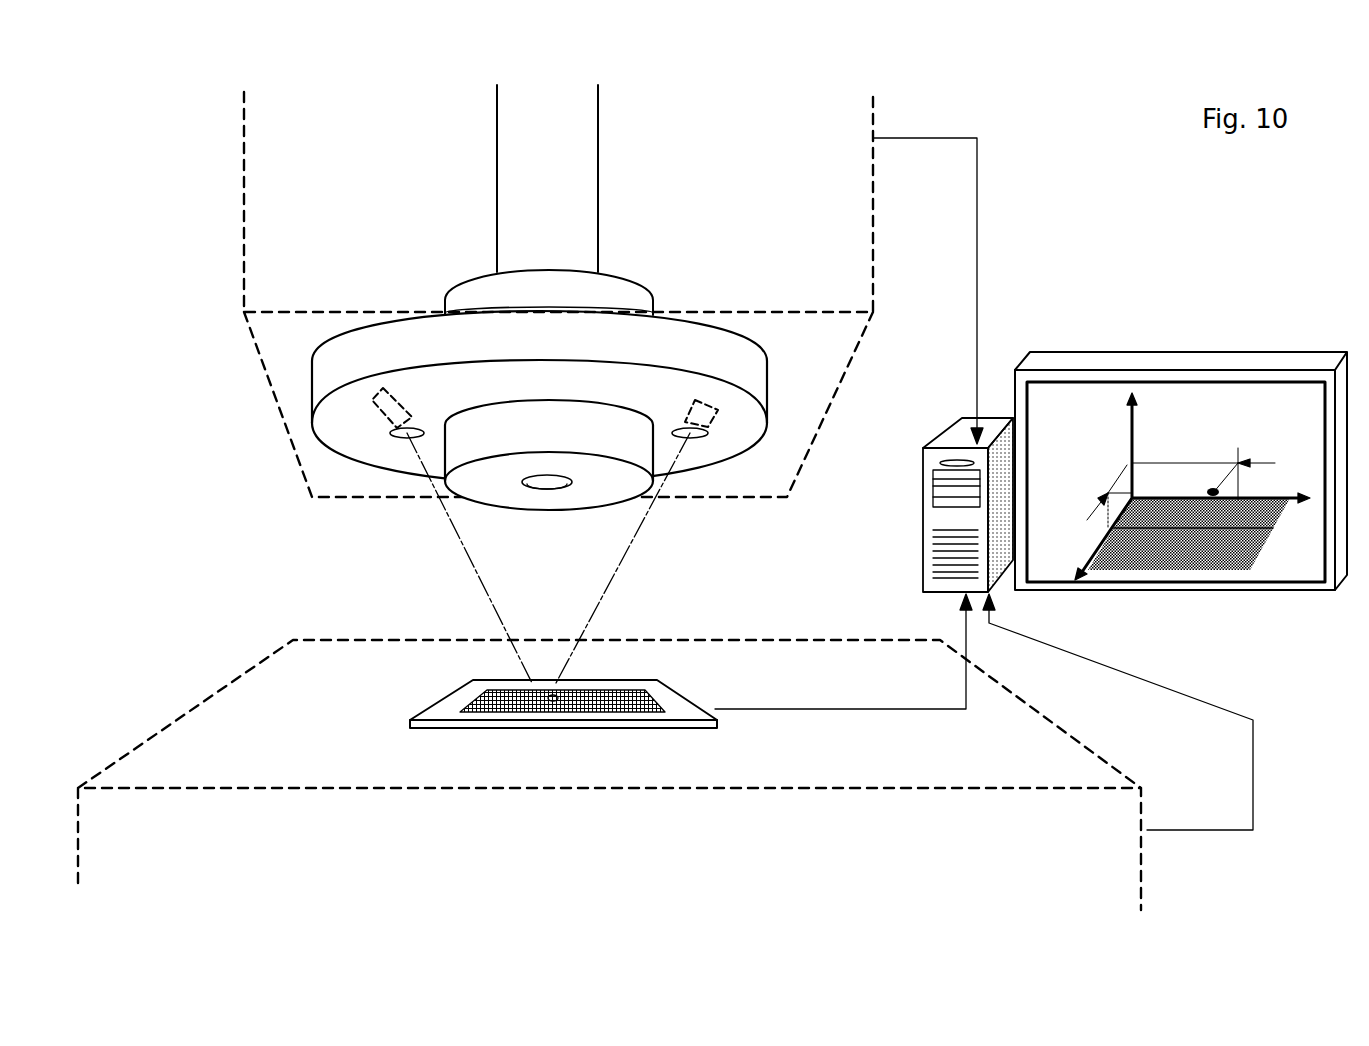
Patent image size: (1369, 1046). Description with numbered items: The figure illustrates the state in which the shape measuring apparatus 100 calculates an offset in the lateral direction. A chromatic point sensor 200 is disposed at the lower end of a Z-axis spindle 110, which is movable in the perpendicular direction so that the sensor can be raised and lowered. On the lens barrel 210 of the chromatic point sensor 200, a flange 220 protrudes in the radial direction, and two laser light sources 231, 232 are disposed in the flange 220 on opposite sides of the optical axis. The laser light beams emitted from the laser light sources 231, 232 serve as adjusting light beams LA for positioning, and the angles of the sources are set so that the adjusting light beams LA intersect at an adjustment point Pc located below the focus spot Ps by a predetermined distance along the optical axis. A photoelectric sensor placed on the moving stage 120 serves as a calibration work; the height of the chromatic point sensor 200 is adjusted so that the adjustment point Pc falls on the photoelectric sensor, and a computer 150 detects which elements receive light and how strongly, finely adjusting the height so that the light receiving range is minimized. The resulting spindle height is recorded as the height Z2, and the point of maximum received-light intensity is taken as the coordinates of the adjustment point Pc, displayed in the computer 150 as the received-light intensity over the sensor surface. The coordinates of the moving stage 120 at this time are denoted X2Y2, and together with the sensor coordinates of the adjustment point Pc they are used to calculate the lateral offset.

The shape measuring apparatus 100 is at (1063, 264).
The Z-axis spindle 110 is at (272, 212).
The moving stage 120 is at (233, 708).
The computer 150 is at (958, 440).
The chromatic point sensor 200 is at (585, 212).
The lens barrel 210 is at (470, 290).
The flange 220 is at (752, 388).
The laser light source 231 is at (382, 398).
The laser light source 232 is at (712, 398).
The height of the Z-axis spindle Z2 is at (928, 276).
The focus spot Ps is at (547, 500).
The adjusting light beam LA is at (493, 597).
The adjustment point Pc is at (553, 697).
The coordinates of the moving stage X2Y2 is at (1227, 685).